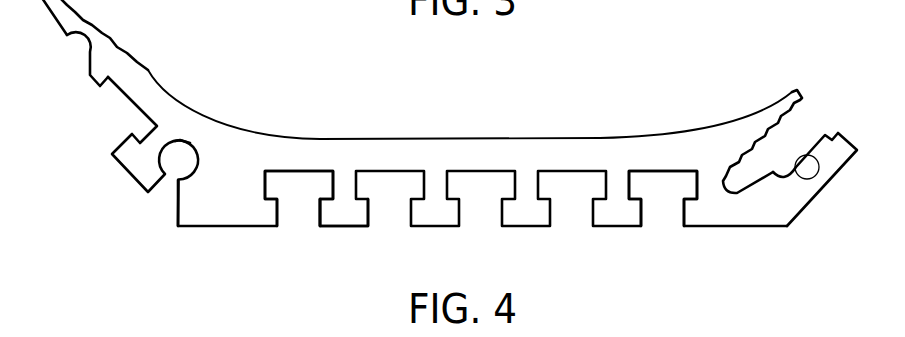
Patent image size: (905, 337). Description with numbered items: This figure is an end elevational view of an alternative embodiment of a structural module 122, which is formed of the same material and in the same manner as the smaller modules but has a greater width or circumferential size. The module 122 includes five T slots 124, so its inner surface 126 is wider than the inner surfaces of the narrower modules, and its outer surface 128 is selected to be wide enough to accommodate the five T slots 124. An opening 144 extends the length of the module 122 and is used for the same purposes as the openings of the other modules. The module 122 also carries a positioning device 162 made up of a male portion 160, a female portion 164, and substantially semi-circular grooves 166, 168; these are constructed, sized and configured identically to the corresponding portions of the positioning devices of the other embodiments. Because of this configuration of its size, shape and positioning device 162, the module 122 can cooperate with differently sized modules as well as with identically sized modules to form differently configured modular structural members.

The module 122 is at (671, 105).
The T slots 124 is at (297, 222).
The inner surface 126 is at (538, 138).
The outer surface 128 is at (343, 227).
The opening 144 is at (164, 198).
The male portion 160 is at (100, 33).
The positioning device 162 is at (846, 131).
The female portion 164 is at (796, 92).
The semi-circular groove 166 is at (75, 45).
The semi-circular groove 168 is at (806, 179).